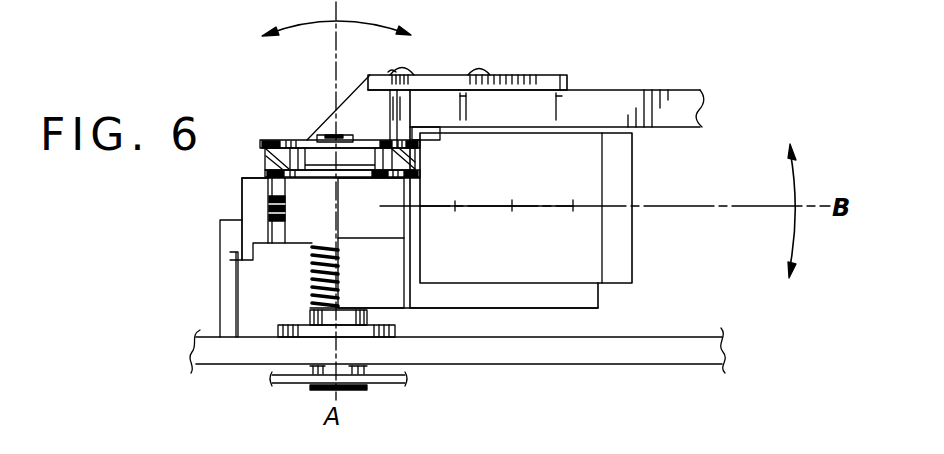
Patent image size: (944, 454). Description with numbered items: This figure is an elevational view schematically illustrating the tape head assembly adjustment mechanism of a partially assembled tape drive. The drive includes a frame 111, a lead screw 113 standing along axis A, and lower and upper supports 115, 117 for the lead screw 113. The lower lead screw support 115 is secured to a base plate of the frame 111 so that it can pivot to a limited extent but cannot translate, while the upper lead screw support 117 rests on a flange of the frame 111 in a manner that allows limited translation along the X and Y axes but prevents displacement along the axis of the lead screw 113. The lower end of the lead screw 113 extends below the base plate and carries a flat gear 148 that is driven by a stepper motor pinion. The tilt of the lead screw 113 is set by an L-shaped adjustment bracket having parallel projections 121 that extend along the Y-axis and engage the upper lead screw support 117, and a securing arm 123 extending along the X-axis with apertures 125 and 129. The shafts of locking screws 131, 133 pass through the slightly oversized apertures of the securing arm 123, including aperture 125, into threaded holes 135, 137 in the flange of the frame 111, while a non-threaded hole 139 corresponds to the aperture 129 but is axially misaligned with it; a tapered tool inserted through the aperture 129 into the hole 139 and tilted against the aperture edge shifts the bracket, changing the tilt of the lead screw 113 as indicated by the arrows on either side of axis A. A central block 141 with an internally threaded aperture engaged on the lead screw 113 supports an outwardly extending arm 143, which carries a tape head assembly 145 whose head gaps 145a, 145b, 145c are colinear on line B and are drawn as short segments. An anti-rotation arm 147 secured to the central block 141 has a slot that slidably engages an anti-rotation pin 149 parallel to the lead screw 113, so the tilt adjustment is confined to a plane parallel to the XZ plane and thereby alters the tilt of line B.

The frame 111 is at (662, 90).
The lead screw 113 is at (311, 283).
The lower lead screw support 115 is at (395, 330).
The upper lead screw support 117 is at (298, 140).
The parallel projections 121 is at (258, 143).
The securing arm 123 is at (446, 80).
The aperture 125 is at (414, 66).
The aperture 129 is at (566, 88).
The locking screw 131 is at (392, 75).
The locking screw 133 is at (479, 75).
The threaded hole 135 is at (398, 100).
The threaded hole 137 is at (470, 100).
The non-threaded hole 139 is at (548, 100).
The central block 141 is at (300, 231).
The arm 143 is at (372, 224).
The tape head assembly 145 is at (597, 278).
The head gap 145a is at (456, 207).
The head gap 145b is at (518, 205).
The head gap 145c is at (572, 204).
The anti-rotation arm 147 is at (242, 182).
The flat gear 148 is at (380, 378).
The anti-rotation pin 149 is at (220, 282).